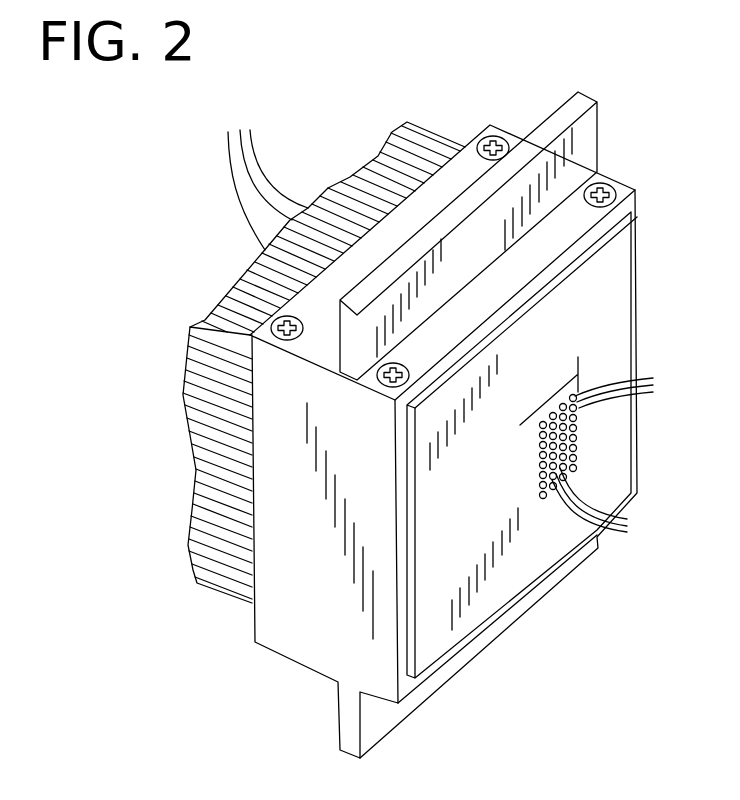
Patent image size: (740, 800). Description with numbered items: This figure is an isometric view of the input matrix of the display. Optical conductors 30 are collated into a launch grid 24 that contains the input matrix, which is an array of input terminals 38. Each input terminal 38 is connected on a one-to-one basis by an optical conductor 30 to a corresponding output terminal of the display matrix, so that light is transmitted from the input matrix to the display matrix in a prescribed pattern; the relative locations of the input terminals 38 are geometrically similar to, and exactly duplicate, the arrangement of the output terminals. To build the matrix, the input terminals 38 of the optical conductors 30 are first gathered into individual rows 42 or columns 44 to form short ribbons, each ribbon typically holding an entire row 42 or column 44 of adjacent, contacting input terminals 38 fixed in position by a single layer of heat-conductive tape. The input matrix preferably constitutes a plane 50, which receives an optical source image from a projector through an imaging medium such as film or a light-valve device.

The launch grid 24 is at (268, 443).
The optical conductors 30 is at (327, 213).
The input terminals 38 is at (636, 386).
The rows 42 is at (552, 462).
The columns 44 is at (612, 508).
The plane 50 is at (520, 425).